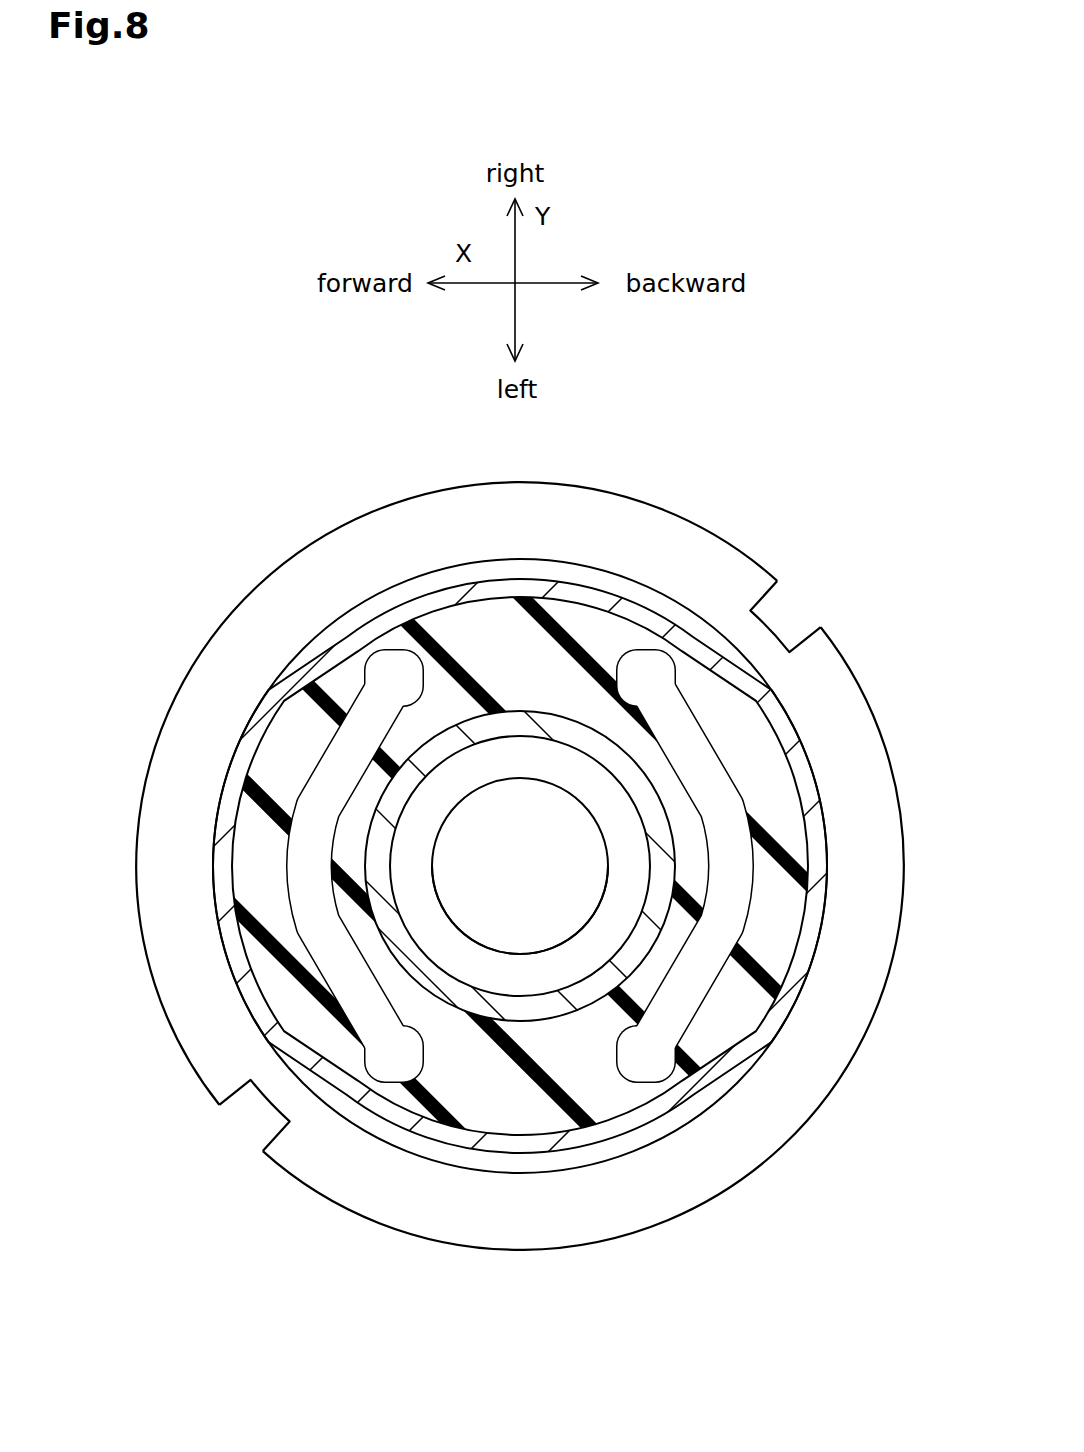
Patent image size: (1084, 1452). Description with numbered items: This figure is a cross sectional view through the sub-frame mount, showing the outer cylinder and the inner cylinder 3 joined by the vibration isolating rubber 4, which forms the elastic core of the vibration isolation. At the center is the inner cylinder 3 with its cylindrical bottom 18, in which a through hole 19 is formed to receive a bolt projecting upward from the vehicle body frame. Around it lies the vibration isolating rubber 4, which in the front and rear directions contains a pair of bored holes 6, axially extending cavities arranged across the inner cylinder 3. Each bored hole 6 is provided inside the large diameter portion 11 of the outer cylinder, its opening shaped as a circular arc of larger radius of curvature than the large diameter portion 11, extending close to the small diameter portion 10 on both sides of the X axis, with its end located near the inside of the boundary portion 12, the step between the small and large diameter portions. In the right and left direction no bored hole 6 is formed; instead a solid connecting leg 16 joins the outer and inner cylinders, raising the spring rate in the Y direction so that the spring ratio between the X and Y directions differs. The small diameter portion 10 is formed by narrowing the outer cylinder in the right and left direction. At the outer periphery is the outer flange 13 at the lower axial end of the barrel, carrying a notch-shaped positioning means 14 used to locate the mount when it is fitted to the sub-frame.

The inner cylinder 3 is at (403, 785).
The vibration isolating rubber 4 is at (549, 1150).
The bored hole 6 is at (722, 818).
The small diameter portion 10 is at (592, 588).
The large diameter portion 11 is at (230, 763).
The boundary portion 12 is at (287, 677).
The outer flange 13 is at (333, 540).
The positioning means 14 is at (777, 613).
The connecting leg 16 is at (468, 615).
The cylindrical bottom 18 is at (425, 887).
The through hole 19 is at (555, 947).